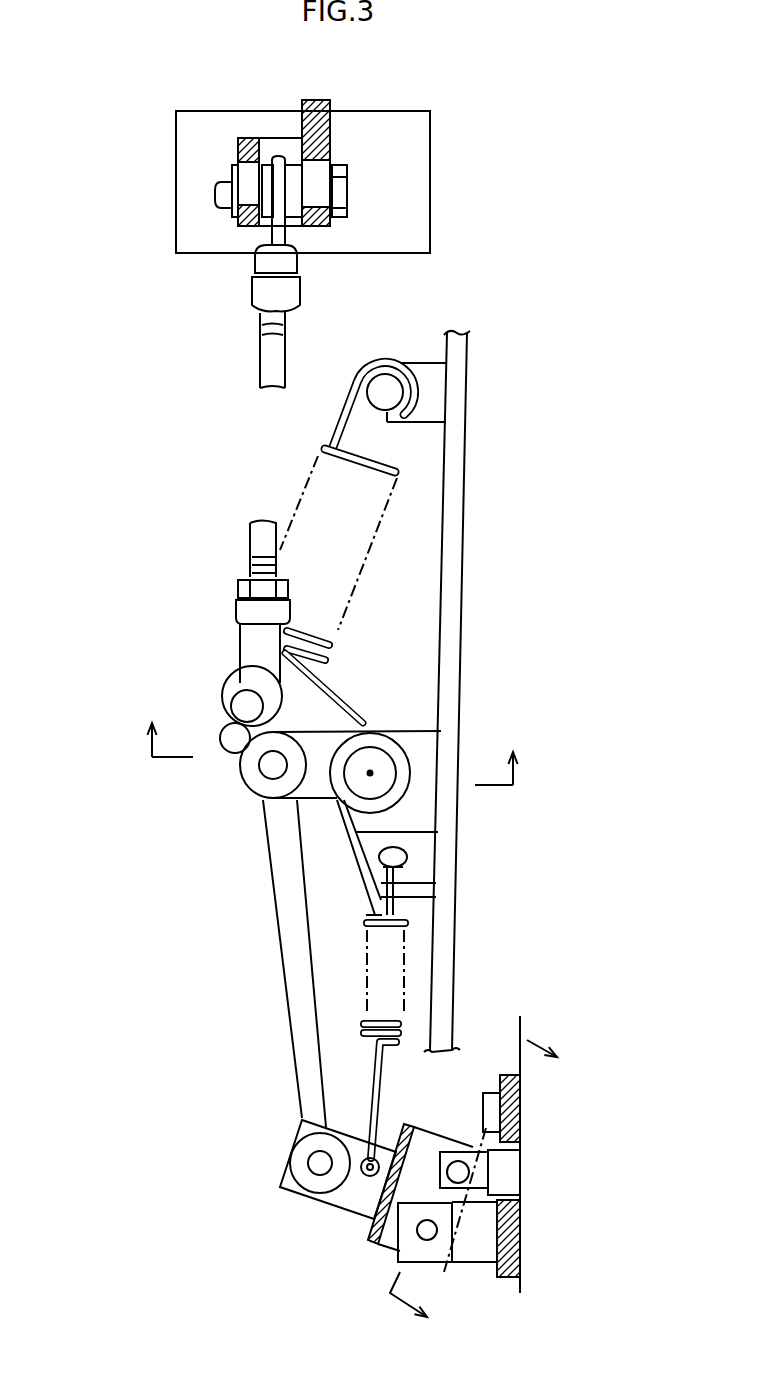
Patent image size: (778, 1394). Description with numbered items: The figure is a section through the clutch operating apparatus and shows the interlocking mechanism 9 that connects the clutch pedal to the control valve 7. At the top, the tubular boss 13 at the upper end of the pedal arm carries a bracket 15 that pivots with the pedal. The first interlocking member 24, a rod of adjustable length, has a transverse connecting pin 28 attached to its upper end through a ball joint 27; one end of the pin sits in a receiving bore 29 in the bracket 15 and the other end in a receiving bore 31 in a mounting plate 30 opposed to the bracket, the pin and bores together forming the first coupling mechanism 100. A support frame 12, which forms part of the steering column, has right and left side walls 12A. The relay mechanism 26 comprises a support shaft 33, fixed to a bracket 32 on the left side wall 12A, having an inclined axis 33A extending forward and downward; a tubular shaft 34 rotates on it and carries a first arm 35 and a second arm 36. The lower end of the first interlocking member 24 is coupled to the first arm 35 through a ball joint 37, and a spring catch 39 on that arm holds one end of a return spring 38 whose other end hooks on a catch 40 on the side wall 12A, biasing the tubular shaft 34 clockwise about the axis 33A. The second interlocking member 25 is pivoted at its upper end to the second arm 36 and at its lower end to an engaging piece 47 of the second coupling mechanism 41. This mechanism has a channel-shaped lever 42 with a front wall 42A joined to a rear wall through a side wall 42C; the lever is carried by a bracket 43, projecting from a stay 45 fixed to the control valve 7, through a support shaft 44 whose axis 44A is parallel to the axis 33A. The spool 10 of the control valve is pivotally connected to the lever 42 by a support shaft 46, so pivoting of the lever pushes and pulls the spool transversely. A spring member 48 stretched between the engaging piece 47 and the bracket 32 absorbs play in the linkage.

The first coupling mechanism 100 is at (272, 125).
The tubular boss 13 is at (395, 245).
The bracket 15 is at (322, 137).
The mounting plate 30 is at (247, 143).
The receiving bore 29 is at (347, 177).
The connecting pin 28 is at (340, 220).
The receiving bore 31 is at (225, 183).
The ball joint 27 is at (243, 233).
The first interlocking member 24 is at (243, 360).
The interlocking mechanism 9 is at (180, 553).
The support frame 12 is at (468, 500).
The side wall 12A is at (457, 555).
The catch 40 is at (388, 393).
The return spring 38 is at (397, 475).
The ball joint 37 is at (233, 683).
The spring catch 39 is at (232, 735).
The first arm 35 is at (343, 697).
The bracket 32 is at (423, 737).
The second arm 36 is at (303, 792).
The support shaft 33 is at (363, 787).
The inclined axis 33A is at (377, 772).
The tubular shaft 34 is at (398, 790).
The relay mechanism 26 is at (333, 848).
The second interlocking member 25 is at (295, 968).
The spring member 48 is at (407, 922).
The engaging piece 47 is at (295, 1128).
The lever 42 is at (377, 1186).
The front wall 42A is at (422, 1143).
The side wall 42C is at (377, 1220).
The support shaft 46 is at (462, 1173).
The stay 45 is at (515, 1110).
The bracket 43 is at (477, 1232).
The support shaft 44 is at (427, 1240).
The axis 44A is at (432, 1232).
The spool 10 is at (488, 1165).
The control valve 7 is at (520, 1293).
The second coupling mechanism 41 is at (428, 1073).